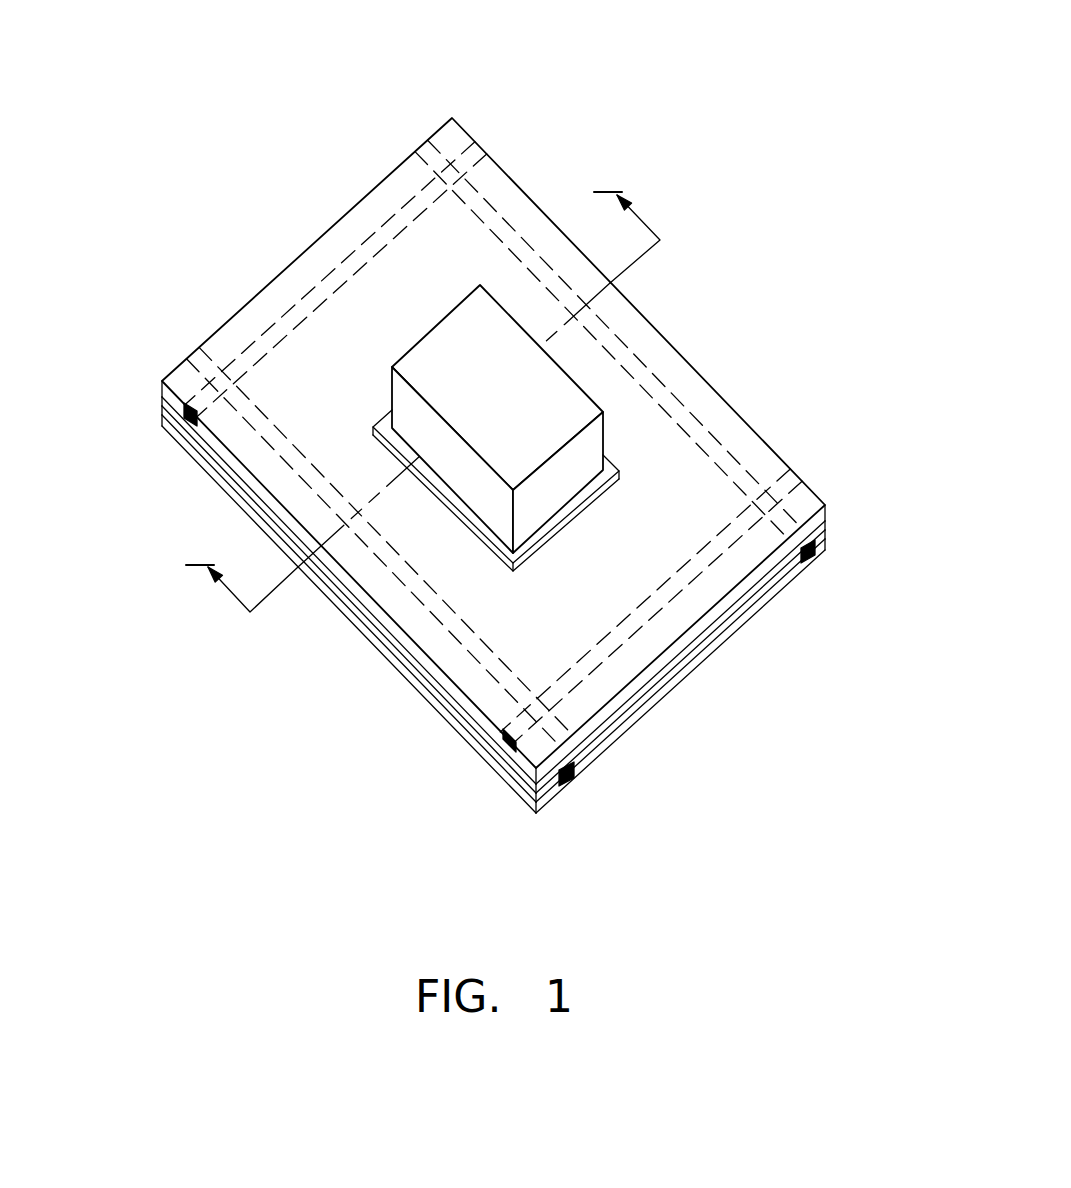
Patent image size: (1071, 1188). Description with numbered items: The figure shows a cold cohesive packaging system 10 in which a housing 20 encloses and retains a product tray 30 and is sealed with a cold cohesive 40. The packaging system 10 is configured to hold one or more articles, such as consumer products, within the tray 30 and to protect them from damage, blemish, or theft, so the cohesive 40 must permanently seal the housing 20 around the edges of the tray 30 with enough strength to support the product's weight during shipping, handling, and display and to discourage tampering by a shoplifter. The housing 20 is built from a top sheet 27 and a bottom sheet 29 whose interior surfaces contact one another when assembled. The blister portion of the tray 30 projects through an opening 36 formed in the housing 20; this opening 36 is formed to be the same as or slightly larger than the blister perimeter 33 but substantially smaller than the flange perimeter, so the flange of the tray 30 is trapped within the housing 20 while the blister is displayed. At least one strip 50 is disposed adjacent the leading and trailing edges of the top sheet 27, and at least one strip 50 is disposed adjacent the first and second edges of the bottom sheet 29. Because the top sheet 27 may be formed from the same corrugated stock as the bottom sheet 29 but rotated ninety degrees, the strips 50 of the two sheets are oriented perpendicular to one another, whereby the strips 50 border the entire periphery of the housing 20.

The cohesive packaging system 10 is at (543, 98).
The housing 20 is at (673, 347).
The top sheet 27 is at (748, 422).
The cold cohesive 40 is at (402, 663).
The bottom sheet 29 is at (432, 706).
The product tray 30 is at (425, 367).
The opening 36 is at (383, 437).
The blister perimeter 33 is at (590, 492).
The strip 50 is at (186, 412).